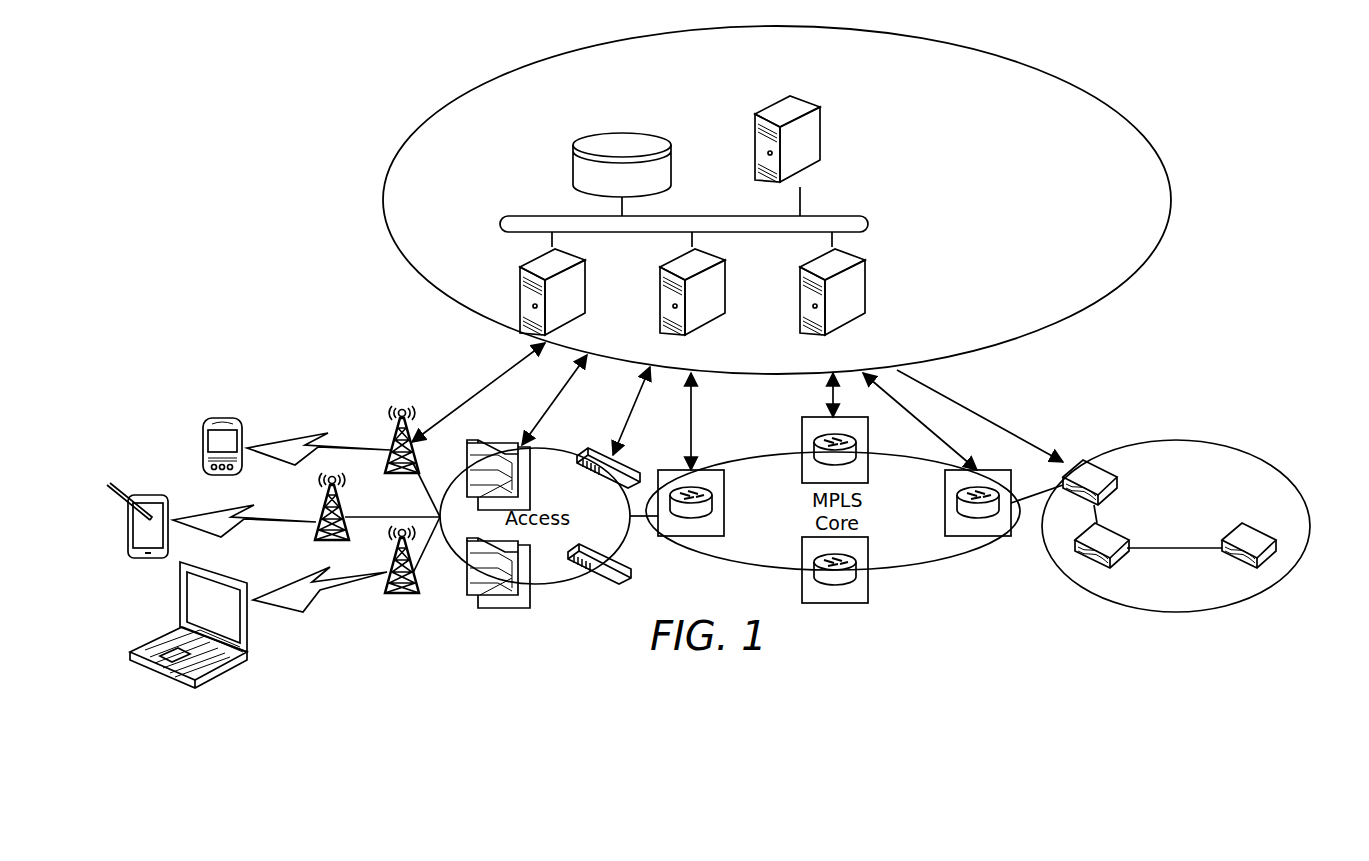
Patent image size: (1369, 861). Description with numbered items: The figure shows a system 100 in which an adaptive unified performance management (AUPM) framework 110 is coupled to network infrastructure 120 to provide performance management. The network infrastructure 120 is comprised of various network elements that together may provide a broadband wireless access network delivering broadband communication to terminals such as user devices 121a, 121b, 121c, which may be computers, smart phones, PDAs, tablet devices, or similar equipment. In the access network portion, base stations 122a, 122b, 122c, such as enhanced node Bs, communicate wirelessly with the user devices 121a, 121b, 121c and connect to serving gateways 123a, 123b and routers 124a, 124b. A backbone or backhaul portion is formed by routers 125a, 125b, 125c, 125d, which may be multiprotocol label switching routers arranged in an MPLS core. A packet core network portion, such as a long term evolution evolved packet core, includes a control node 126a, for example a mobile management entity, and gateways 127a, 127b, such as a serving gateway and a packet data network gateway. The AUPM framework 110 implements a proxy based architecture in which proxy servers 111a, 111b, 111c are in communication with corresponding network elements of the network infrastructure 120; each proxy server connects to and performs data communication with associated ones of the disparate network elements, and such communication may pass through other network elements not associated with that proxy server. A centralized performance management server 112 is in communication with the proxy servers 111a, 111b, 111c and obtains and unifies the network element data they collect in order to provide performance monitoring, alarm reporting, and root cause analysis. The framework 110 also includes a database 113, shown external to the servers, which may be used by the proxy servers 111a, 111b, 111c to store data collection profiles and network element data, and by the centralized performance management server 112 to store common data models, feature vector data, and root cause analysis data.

The system 100 is at (1188, 60).
The adaptive unified performance management (AUPM) framework 110 is at (1016, 60).
The proxy server 111a is at (560, 325).
The proxy server 111b is at (700, 325).
The proxy server 111c is at (840, 325).
The centralized performance management server 112 is at (755, 132).
The database 113 is at (673, 177).
The network infrastructure 120 is at (1248, 427).
The user device 121a is at (203, 446).
The user device 121b is at (128, 523).
The user device 121c is at (178, 596).
The base station 122a is at (395, 432).
The base station 122b is at (325, 500).
The base station 122c is at (387, 596).
The serving gateway 123a is at (478, 447).
The serving gateway 123b is at (497, 590).
The router 124a is at (584, 448).
The router 124b is at (632, 572).
The router 125a is at (724, 503).
The router 125b is at (801, 437).
The router 125c is at (944, 503).
The router 125d is at (801, 583).
The control node 126a is at (1117, 490).
The gateway 127a is at (1076, 550).
The gateway 127b is at (1274, 548).